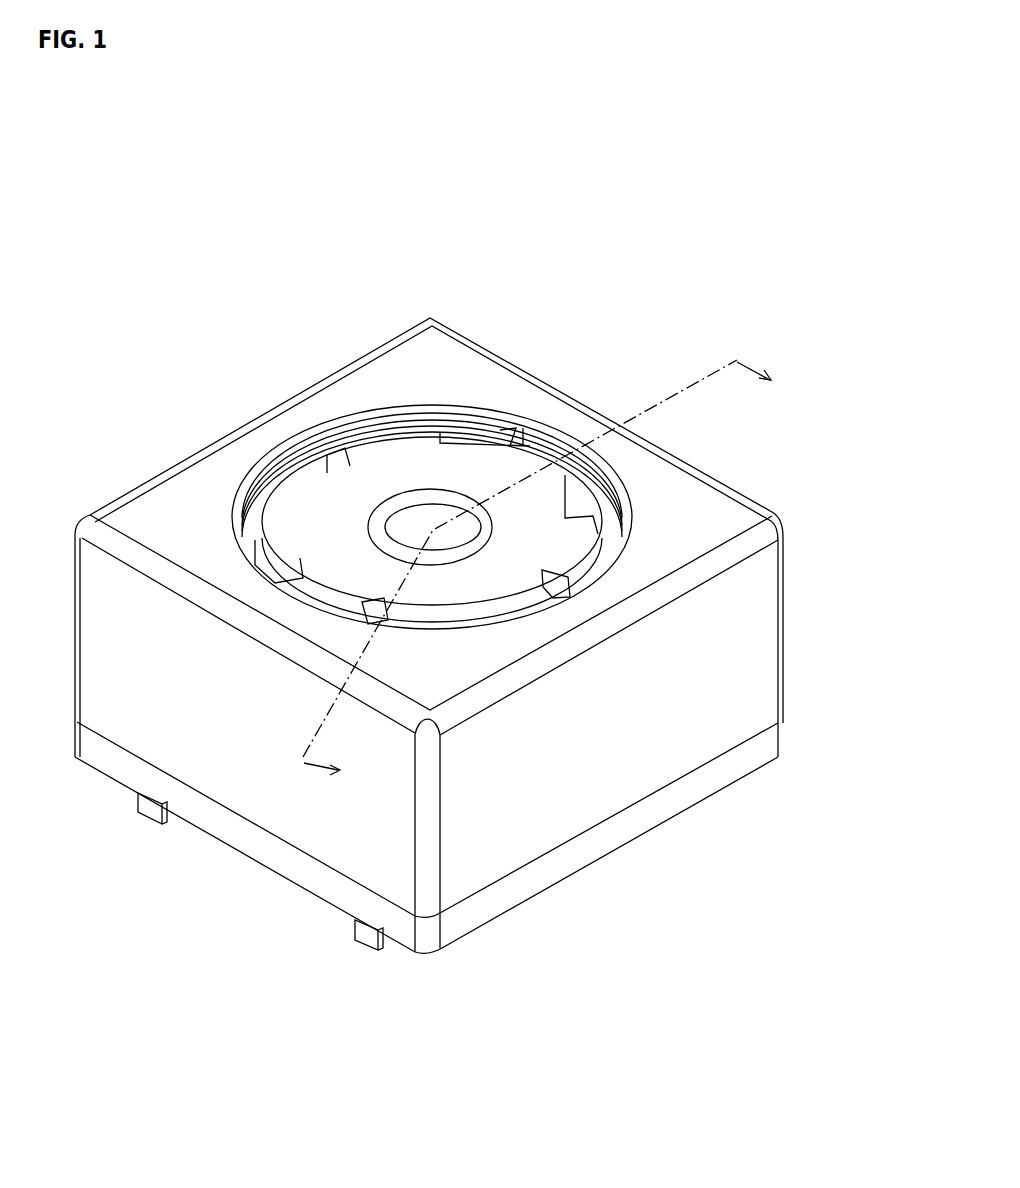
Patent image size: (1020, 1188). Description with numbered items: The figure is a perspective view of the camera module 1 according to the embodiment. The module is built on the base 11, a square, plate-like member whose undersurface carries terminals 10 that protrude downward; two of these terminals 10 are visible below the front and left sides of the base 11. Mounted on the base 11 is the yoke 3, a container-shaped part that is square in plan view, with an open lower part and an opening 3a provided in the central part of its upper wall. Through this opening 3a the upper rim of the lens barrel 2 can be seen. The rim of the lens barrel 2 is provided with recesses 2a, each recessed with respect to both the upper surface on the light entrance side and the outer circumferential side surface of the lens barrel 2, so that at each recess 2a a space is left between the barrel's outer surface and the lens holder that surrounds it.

The camera module 1 is at (456, 604).
The lens barrel 2 is at (537, 425).
The recess 2a is at (290, 553).
The yoke 3 is at (435, 619).
The opening 3a is at (383, 407).
The terminal 10 is at (140, 812).
The base 11 is at (520, 893).